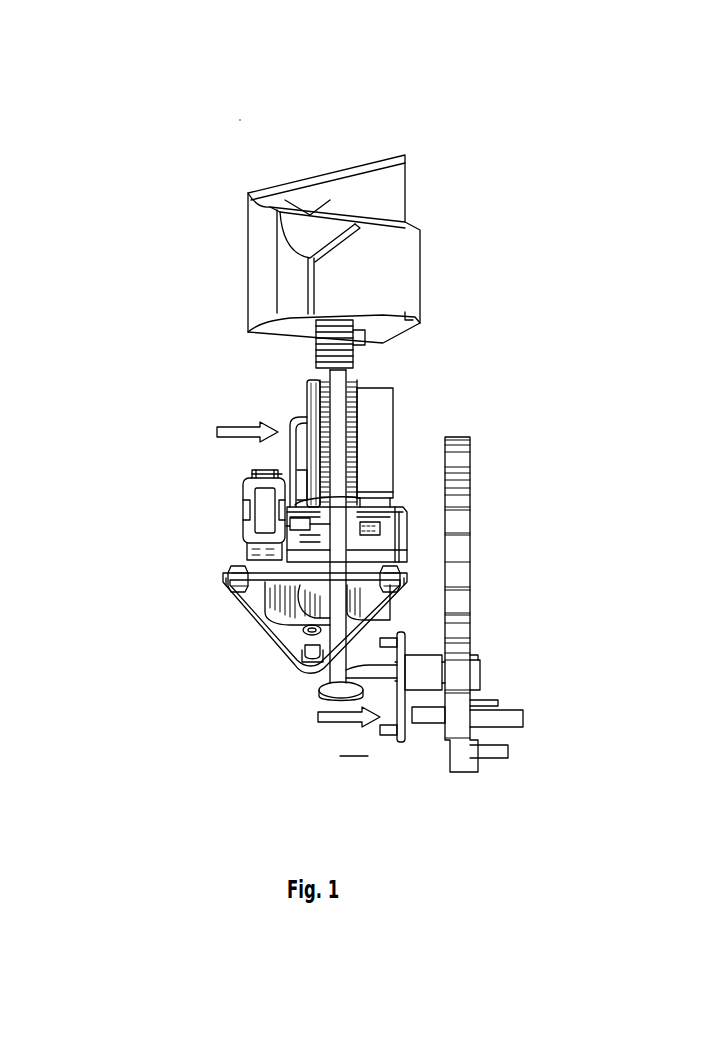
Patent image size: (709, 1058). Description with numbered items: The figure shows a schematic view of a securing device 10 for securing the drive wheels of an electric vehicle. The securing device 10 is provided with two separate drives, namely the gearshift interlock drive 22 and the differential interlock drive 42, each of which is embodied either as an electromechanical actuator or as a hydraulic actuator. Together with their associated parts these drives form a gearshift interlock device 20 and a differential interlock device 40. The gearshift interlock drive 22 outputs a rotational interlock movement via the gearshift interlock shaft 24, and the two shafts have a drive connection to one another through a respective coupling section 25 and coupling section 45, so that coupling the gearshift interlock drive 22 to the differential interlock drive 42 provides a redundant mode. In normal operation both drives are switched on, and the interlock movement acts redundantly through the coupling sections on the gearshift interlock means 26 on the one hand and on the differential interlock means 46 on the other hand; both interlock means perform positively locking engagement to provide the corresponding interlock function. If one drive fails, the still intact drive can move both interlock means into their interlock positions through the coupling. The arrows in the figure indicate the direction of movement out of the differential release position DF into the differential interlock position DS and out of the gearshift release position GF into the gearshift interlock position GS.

The securing device 10 is at (283, 150).
The gearshift interlock device 20 is at (456, 353).
The gearshift interlock drive 22 is at (393, 188).
The gearshift interlock shaft 24 is at (337, 447).
The coupling section 25 is at (383, 527).
The gearshift interlock means 26 is at (383, 726).
The differential interlock device 40 is at (216, 654).
The differential interlock drive 42 is at (260, 503).
The coupling section 45 is at (333, 540).
The differential interlock means 46 is at (313, 417).
The differential release position DF is at (239, 424).
The differential interlock position DS is at (267, 461).
The gearshift release position GF is at (327, 716).
The gearshift interlock position GS is at (355, 743).